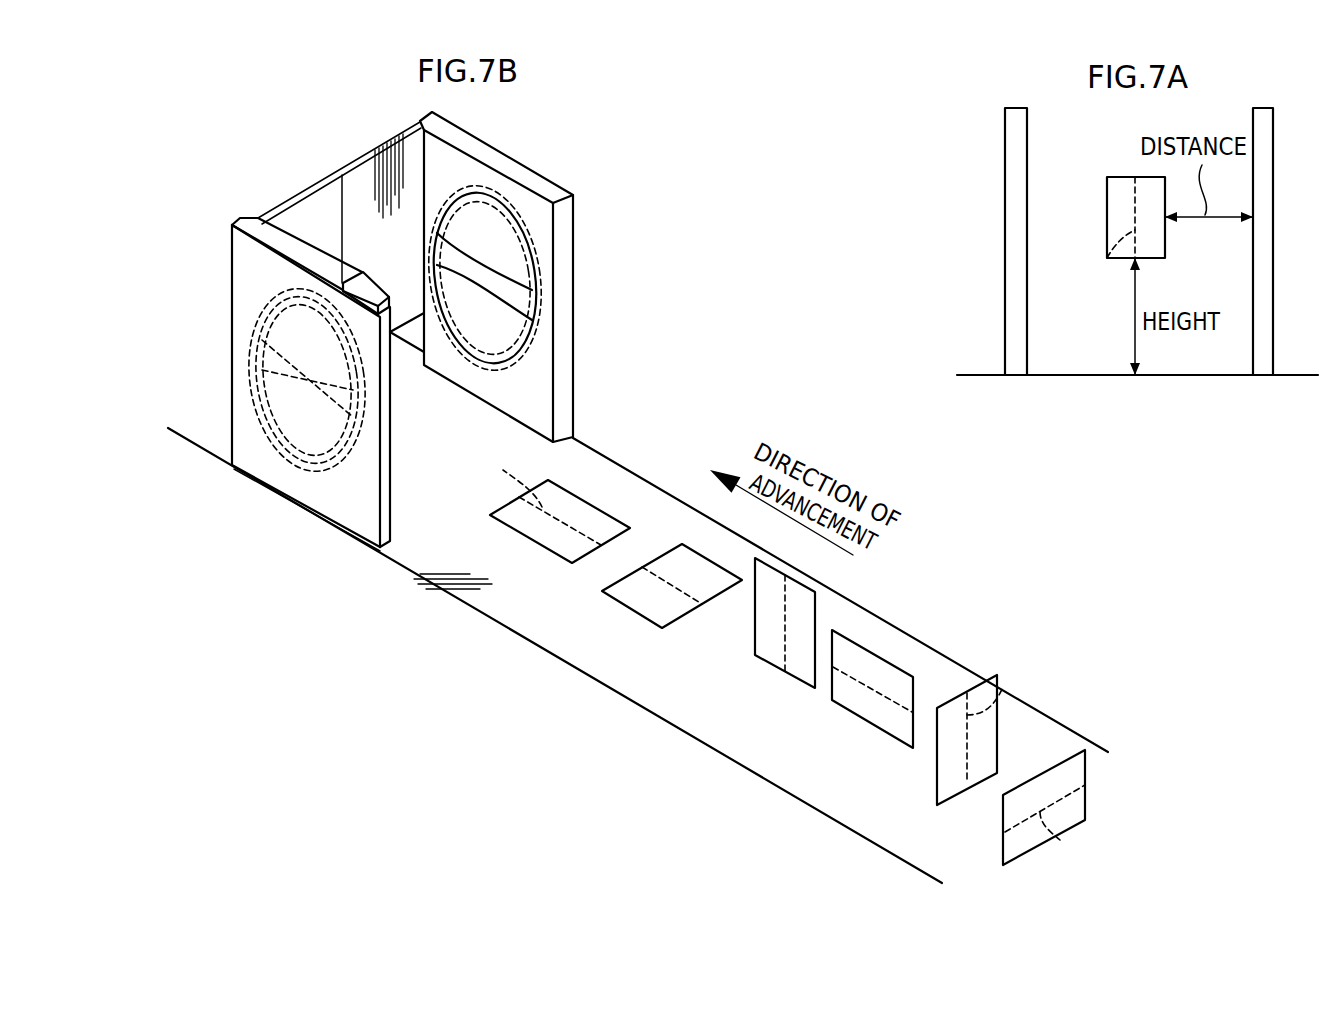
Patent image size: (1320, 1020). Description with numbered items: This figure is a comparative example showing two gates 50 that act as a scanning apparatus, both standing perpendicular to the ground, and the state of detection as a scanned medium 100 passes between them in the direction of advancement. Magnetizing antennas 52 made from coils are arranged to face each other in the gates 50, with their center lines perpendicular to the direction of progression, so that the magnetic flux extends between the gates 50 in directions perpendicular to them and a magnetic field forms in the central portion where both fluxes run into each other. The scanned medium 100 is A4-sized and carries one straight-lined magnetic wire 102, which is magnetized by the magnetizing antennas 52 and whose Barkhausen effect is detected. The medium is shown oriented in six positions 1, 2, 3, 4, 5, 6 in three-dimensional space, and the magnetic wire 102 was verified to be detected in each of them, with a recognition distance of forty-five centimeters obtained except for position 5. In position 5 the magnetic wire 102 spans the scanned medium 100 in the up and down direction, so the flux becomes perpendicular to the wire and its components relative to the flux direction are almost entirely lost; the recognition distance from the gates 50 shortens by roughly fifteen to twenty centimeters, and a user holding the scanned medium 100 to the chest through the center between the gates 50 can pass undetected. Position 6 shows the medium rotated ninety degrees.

In FIG. 7B, the position 1 is at (575, 475).
In FIG. 7B, the position 2 is at (683, 532).
In FIG. 7B, the position 3 is at (820, 605).
In FIG. 7B, the position 4 is at (892, 650).
In FIG. 7B, the position 5 is at (1008, 728).
In FIG. 7B, the position 6 is at (1102, 782).
In FIG. 7A, the gates 50 is at (1012, 107).
In FIG. 7B, the gates 50 is at (280, 242).
In FIG. 7B, the magnetizing antennas 52 is at (342, 470).
In FIG. 7A, the scanned medium 100 is at (1107, 203).
In FIG. 7B, the scanned medium 100 is at (802, 648).
In FIG. 7A, the magnetic wire 102 is at (1107, 258).
In FIG. 7B, the magnetic wire 102 is at (1069, 866).